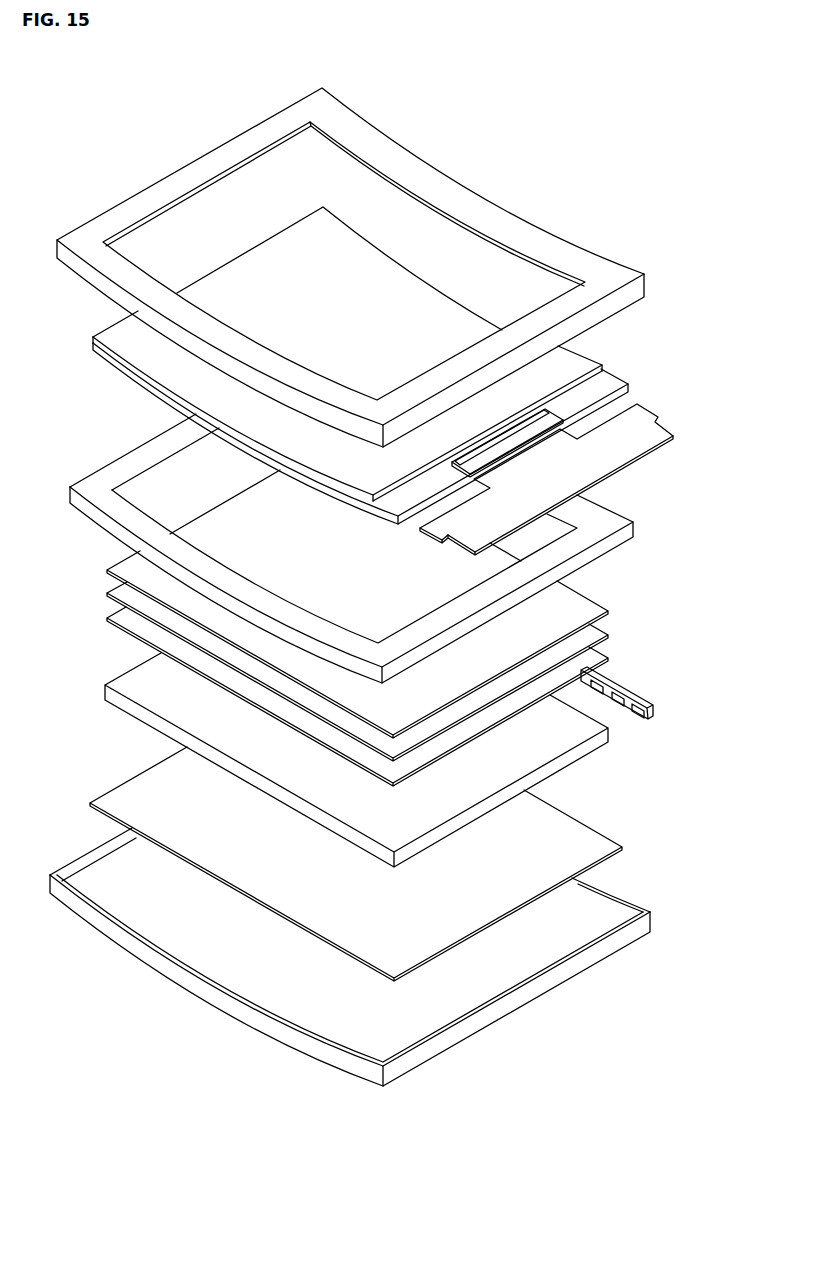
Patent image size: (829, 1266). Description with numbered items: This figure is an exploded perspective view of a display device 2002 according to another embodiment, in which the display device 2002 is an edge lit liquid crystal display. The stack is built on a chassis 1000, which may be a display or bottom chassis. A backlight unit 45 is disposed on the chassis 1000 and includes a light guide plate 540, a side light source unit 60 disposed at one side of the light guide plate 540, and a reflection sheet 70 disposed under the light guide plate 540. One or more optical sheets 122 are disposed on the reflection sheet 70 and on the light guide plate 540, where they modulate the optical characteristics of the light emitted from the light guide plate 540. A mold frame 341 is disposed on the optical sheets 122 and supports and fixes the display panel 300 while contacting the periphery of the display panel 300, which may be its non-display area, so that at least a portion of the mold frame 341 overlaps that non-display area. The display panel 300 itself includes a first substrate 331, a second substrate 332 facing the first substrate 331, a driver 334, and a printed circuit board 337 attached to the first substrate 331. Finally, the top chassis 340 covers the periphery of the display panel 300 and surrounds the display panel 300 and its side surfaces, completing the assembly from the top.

The display device 2002 is at (536, 112).
The top chassis 340 is at (630, 262).
The display panel 300 is at (445, 381).
The first substrate 331 is at (573, 362).
The second substrate 332 is at (600, 388).
The driver 334 is at (545, 416).
The printed circuit board 337 is at (654, 433).
The mold frame 341 is at (618, 522).
The optical sheet 122 is at (632, 606).
The backlight unit 45 is at (417, 817).
The side light source unit 60 is at (655, 707).
The light guide plate 540 is at (580, 740).
The reflection sheet 70 is at (598, 840).
The chassis 1000 is at (651, 925).